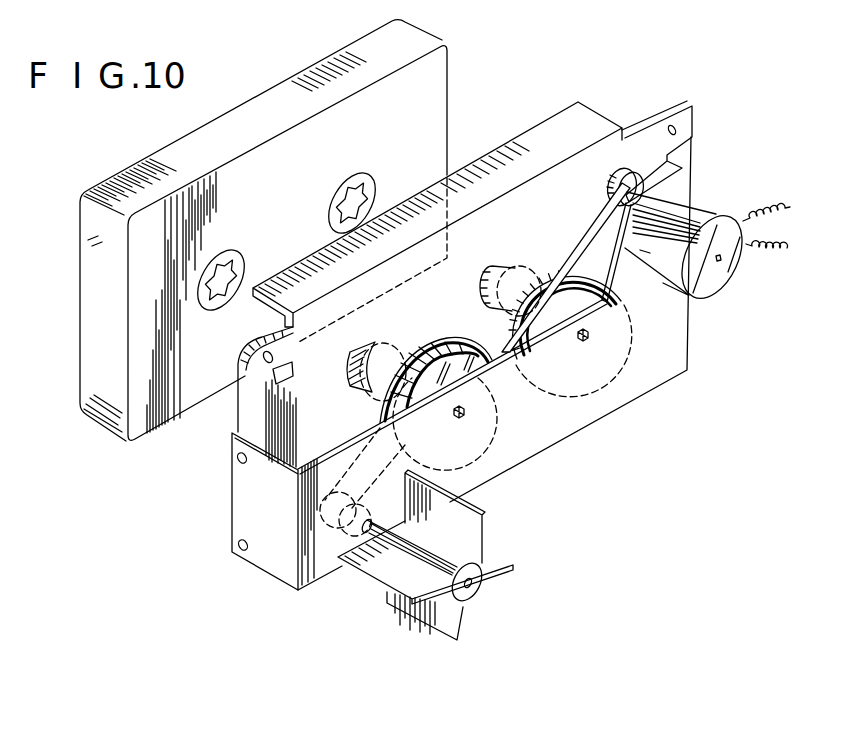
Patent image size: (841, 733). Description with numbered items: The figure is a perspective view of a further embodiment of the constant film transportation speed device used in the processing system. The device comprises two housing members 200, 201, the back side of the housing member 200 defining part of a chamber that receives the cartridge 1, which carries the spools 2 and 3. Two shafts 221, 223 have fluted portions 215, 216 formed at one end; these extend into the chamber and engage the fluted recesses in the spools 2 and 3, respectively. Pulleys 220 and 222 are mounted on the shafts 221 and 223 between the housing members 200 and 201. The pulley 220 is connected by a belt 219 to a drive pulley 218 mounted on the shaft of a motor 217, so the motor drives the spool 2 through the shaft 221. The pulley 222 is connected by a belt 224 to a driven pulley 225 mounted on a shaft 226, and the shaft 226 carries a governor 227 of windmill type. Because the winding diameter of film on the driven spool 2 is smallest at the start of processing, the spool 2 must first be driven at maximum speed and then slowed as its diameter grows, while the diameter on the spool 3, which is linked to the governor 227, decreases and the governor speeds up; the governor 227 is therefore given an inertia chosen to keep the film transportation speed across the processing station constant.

The cartridge 1 is at (418, 43).
The spool 2 is at (367, 181).
The spool 3 is at (240, 257).
The housing member 200 is at (590, 122).
The housing member 201 is at (631, 390).
The fluted portion 215 is at (503, 265).
The fluted portion 216 is at (377, 347).
The motor 217 is at (697, 208).
The drive pulley 218 is at (633, 190).
The belt 219 is at (583, 237).
The pulley 220 is at (590, 291).
The shaft 221 is at (590, 340).
The pulley 222 is at (483, 377).
The shaft 223 is at (462, 417).
The belt 224 is at (383, 398).
The driven pulley 225 is at (332, 575).
The shaft 226 is at (470, 582).
The governor 227 is at (460, 628).